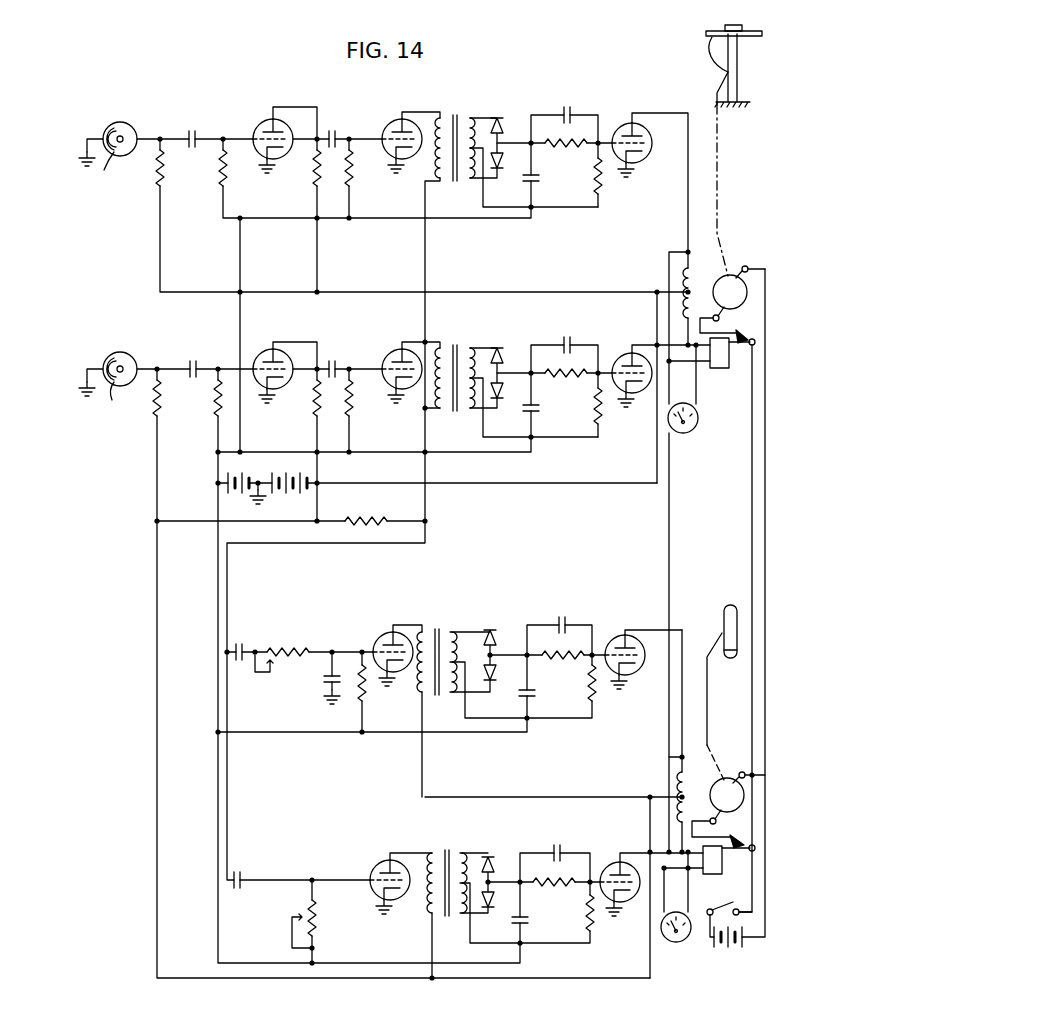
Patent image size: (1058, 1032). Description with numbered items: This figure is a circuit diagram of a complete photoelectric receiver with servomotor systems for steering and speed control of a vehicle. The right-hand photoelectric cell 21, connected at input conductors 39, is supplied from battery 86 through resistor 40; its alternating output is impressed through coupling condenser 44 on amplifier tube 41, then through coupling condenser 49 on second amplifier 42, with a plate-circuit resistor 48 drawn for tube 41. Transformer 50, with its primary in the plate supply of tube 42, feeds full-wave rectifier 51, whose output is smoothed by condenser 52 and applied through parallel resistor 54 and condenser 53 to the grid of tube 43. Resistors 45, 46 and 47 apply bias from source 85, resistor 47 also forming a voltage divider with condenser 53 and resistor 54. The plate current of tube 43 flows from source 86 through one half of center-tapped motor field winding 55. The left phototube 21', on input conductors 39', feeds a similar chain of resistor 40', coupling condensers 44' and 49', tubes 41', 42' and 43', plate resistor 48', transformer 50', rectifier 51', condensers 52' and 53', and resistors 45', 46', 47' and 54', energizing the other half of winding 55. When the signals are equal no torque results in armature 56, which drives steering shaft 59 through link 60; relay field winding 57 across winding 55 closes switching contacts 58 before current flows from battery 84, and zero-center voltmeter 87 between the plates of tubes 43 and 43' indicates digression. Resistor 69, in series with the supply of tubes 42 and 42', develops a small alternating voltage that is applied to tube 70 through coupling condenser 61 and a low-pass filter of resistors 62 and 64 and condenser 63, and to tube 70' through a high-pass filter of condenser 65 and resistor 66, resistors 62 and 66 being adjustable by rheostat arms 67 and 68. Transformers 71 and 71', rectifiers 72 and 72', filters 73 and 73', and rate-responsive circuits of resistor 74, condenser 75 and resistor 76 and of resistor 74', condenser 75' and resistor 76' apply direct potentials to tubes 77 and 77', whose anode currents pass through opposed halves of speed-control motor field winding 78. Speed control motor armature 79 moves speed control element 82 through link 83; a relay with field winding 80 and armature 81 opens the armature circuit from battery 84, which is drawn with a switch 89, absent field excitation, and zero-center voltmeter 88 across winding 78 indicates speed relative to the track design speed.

The right-hand photoelectric cell 21 is at (120, 125).
The input conductors 39 is at (96, 160).
The resistor 40 is at (143, 168).
The amplifier tube 41 is at (268, 134).
The second amplifier 42 is at (397, 134).
The tube 43 is at (630, 140).
The coupling condenser 44 is at (195, 150).
The resistor 45 is at (215, 169).
The resistor 46 is at (364, 168).
The resistor 47 is at (613, 181).
The plate resistor 48 is at (304, 168).
The coupling condenser 49 is at (339, 121).
The transformer 50 is at (458, 134).
The full-wave rectifier 51 is at (505, 128).
The condenser 52 is at (544, 184).
The condenser 53 is at (582, 105).
The resistor 54 is at (566, 159).
The center-tapped motor field winding 55 is at (682, 275).
The armature 56 is at (716, 292).
The field winding 57 is at (722, 368).
The switching contacts 58 is at (740, 337).
The steering shaft 59 is at (710, 33).
The link 60 is at (720, 162).
The left phototube 21' is at (118, 357).
The input conductors 39' is at (97, 391).
The resistor 40' is at (140, 404).
The amplifier tube 41' is at (267, 367).
The amplifier tube 42' is at (395, 366).
The direct-current amplifier tube 43' is at (629, 370).
The coupling condenser 44' is at (188, 355).
The resistor 45' is at (203, 404).
The resistor 46' is at (361, 404).
The resistor 47' is at (615, 413).
The plate resistor 48' is at (300, 404).
The coupling condenser 49' is at (336, 353).
The transformer 50' is at (458, 364).
The full-wave rectifier 51' is at (507, 358).
The condenser 52' is at (543, 418).
The condenser 53' is at (582, 335).
The resistor 54' is at (568, 388).
The source 85 is at (238, 496).
The battery 86 is at (305, 500).
The resistor 69 is at (380, 518).
The zero-center direct-current voltmeter 87 is at (698, 424).
The coupling condenser 61 is at (245, 647).
The resistor 62 is at (287, 650).
The condenser 63 is at (324, 679).
The resistor 64 is at (367, 698).
The rheostat arm 67 is at (268, 674).
The amplifier tube 70 is at (387, 650).
The transformer 71 is at (438, 647).
The rectifier 72 is at (501, 640).
The filter 73 is at (514, 703).
The resistor 74 is at (563, 669).
The condenser 75 is at (574, 617).
The resistor 76 is at (606, 693).
The tube 77 is at (634, 662).
The speed control element 82 is at (722, 613).
The link 83 is at (708, 696).
The condenser 65 is at (242, 871).
The resistor 66 is at (318, 917).
The rheostat arm 68 is at (292, 926).
The tube 70' is at (384, 878).
The transformer 71' is at (448, 871).
The rectifier 72' is at (500, 866).
The filter 73' is at (535, 926).
The resistor 74' is at (554, 892).
The condenser 75' is at (573, 843).
The resistor 76' is at (603, 923).
The tube 77' is at (620, 871).
The speed-control motor field winding 78 is at (676, 779).
The speed control motor armature 79 is at (714, 794).
The field winding 80 is at (722, 866).
The armature 81 is at (740, 838).
The battery 84 is at (737, 950).
The zero-center direct-current voltmeter 88 is at (680, 944).
The switch 89 is at (716, 908).